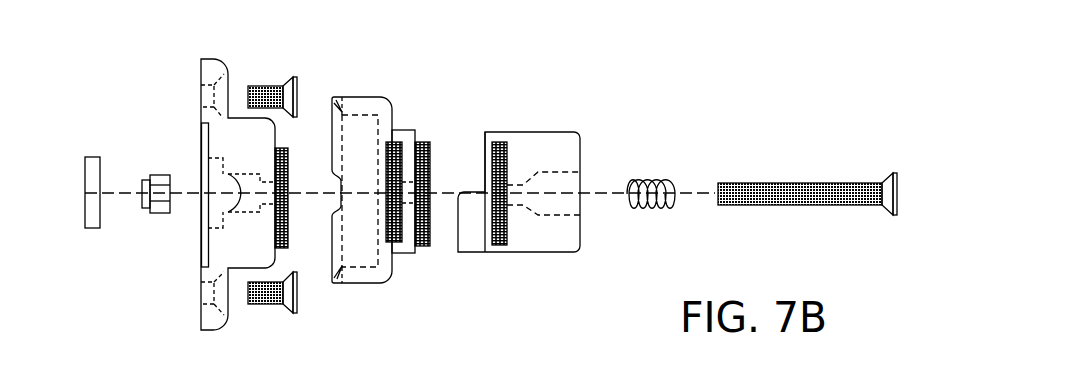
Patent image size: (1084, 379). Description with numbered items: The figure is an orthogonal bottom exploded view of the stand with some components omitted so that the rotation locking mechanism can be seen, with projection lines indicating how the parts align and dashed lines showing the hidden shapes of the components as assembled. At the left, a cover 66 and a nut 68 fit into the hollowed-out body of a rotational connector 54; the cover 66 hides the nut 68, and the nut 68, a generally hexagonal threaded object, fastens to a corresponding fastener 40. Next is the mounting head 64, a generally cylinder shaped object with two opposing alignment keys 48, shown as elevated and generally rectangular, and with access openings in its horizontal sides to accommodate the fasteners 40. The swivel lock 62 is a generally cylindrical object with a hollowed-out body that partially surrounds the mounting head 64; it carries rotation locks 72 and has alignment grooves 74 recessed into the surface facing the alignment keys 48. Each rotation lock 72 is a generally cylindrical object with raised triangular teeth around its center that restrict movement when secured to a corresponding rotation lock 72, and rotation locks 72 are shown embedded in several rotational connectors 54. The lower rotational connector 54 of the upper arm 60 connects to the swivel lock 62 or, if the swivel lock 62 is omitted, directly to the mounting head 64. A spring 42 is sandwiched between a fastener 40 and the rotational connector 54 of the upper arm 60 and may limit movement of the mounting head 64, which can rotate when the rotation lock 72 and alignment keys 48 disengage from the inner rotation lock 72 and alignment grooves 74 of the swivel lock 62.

The fastener 40 is at (284, 84).
The spring 42 is at (650, 175).
The alignment key 48 is at (237, 178).
The rotational connector 54 is at (530, 243).
The upper arm 60 is at (507, 231).
The swivel lock 62 is at (370, 82).
The mounting head 64 is at (188, 272).
The cover 66 is at (94, 157).
The nut 68 is at (158, 175).
The rotation lock 72 is at (487, 140).
The alignment groove 74 is at (340, 118).